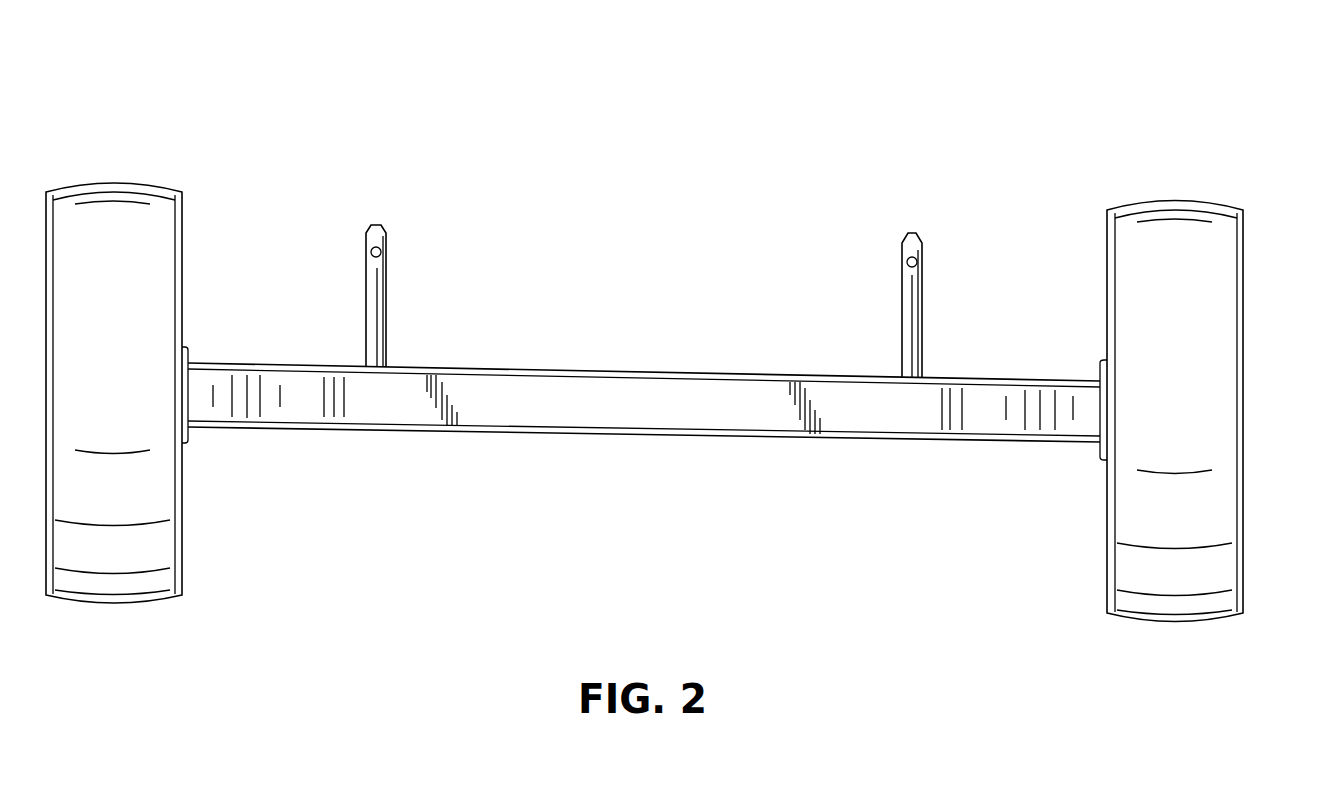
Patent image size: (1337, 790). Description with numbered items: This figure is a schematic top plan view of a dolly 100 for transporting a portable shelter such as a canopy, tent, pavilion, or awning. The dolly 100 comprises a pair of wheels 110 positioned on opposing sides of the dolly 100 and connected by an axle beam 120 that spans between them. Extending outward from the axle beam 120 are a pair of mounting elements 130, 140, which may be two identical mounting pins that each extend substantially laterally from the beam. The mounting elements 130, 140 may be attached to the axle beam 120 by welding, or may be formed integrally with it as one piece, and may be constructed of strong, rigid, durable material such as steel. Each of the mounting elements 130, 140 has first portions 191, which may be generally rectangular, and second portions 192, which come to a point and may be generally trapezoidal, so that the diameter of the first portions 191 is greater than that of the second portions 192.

The dolly 100 is at (1052, 140).
The wheels 110 is at (115, 180).
The axle beam 120 is at (707, 366).
The mounting element 130 is at (389, 270).
The mounting element 140 is at (925, 289).
The first portion 191 is at (387, 297).
The second portion 192 is at (387, 231).